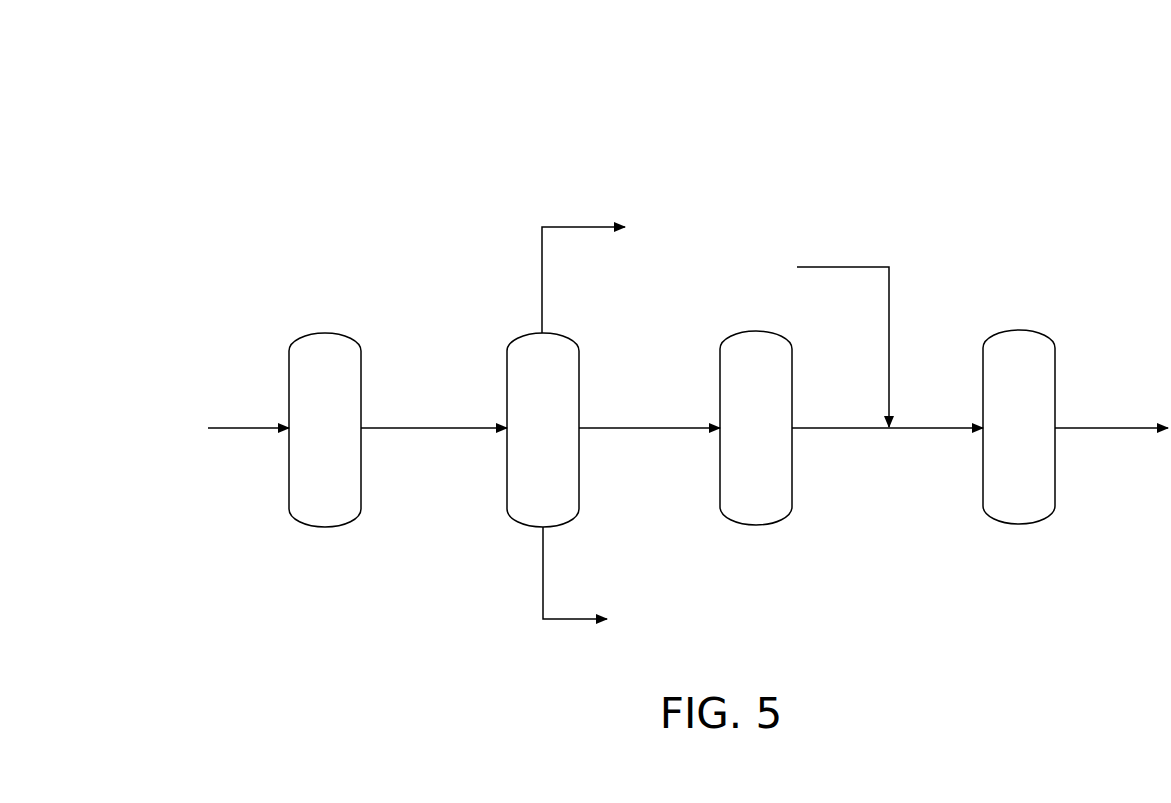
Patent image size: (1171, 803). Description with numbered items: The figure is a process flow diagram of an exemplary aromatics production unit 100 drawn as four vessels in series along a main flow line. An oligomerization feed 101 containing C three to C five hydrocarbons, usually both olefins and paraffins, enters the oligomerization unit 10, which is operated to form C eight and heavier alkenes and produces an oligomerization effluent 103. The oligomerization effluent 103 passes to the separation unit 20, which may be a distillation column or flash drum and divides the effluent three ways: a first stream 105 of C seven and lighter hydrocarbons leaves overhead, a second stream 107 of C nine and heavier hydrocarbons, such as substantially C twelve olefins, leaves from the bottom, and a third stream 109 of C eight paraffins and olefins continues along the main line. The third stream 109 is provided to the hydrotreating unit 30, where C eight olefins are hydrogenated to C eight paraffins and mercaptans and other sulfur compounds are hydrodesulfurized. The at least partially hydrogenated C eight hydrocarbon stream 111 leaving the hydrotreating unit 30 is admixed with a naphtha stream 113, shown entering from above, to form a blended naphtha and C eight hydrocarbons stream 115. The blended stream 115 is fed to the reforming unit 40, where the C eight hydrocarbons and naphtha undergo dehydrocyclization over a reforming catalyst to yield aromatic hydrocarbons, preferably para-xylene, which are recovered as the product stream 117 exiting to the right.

The aromatics production unit 100 is at (900, 130).
The oligomerization unit 10 is at (347, 320).
The separation unit 20 is at (608, 357).
The hydrotreating unit 30 is at (797, 527).
The reforming unit 40 is at (1077, 338).
The oligomerization feed 101 is at (240, 428).
The oligomerization effluent 103 is at (458, 428).
The first stream 105 is at (570, 226).
The second stream 107 is at (572, 648).
The third stream 109 is at (617, 429).
The at least partially hydrogenated C8 hydrocarbon stream 111 is at (833, 429).
The naphtha stream 113 is at (817, 266).
The blended naphtha and C8 hydrocarbons stream 115 is at (915, 425).
The product stream 117 is at (1087, 430).